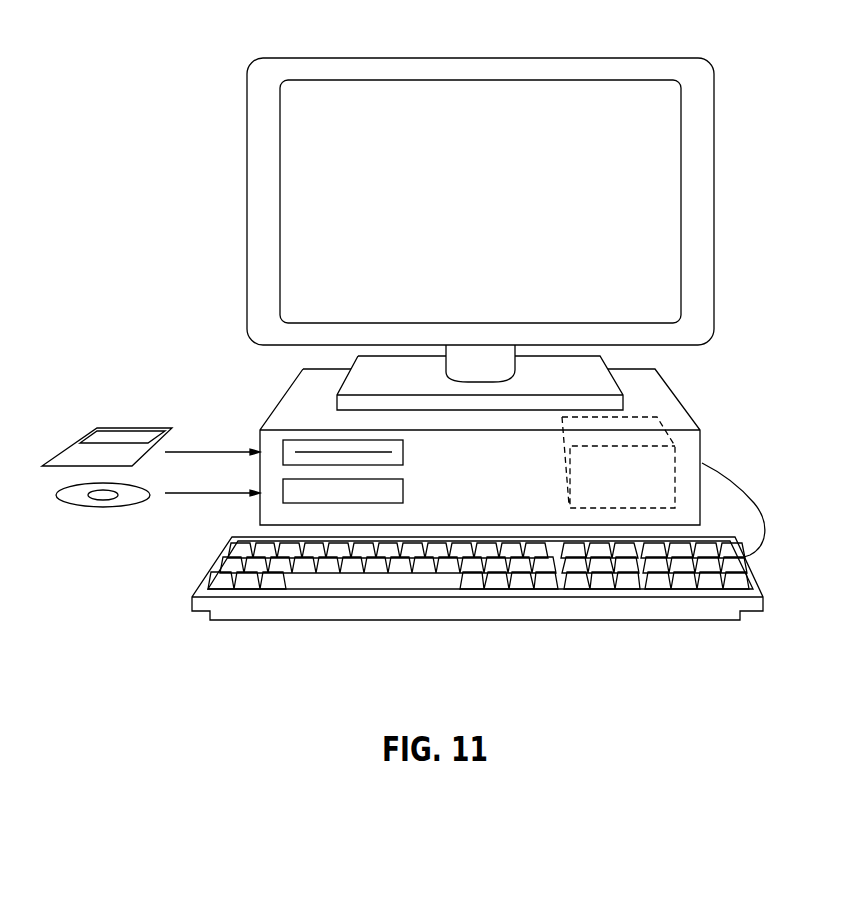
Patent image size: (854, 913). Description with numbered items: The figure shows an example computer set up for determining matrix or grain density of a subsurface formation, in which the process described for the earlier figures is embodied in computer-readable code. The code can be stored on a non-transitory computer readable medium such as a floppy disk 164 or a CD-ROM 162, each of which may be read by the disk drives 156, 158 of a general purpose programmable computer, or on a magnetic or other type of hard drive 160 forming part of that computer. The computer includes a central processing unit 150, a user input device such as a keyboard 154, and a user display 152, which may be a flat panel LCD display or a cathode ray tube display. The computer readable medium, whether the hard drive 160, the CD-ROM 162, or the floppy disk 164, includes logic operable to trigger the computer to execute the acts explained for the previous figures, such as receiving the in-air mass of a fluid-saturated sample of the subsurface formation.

The central processing unit 150 is at (493, 463).
The user display 152 is at (558, 57).
The keyboard 154 is at (190, 598).
The disk drive 156 is at (403, 491).
The disk drive 158 is at (308, 440).
The hard drive 160 is at (562, 455).
The CD-ROM 162 is at (102, 508).
The floppy disk 164 is at (112, 428).